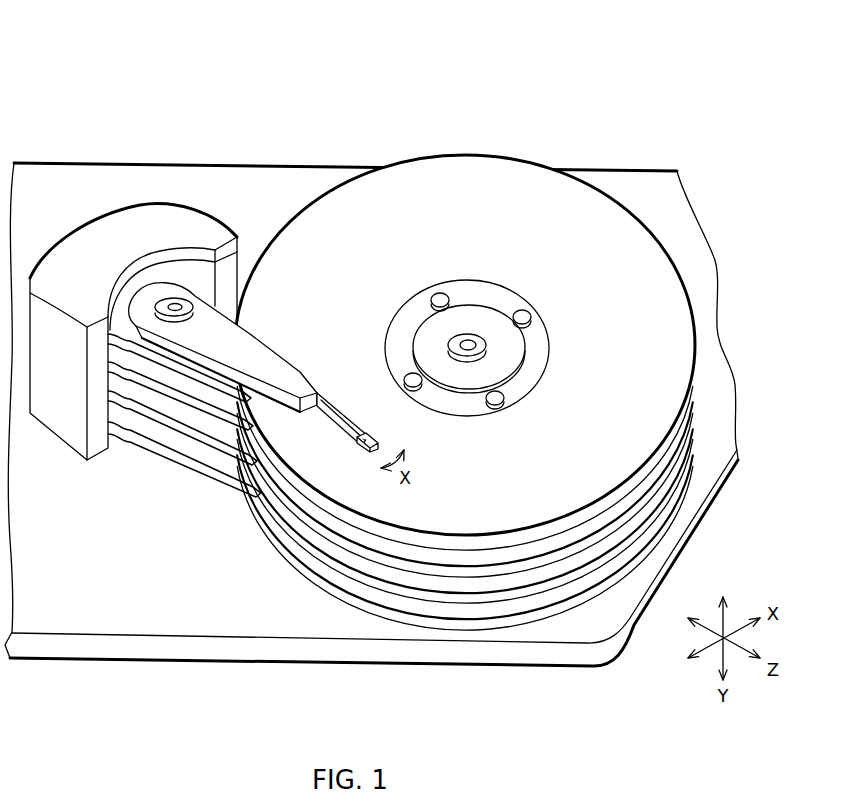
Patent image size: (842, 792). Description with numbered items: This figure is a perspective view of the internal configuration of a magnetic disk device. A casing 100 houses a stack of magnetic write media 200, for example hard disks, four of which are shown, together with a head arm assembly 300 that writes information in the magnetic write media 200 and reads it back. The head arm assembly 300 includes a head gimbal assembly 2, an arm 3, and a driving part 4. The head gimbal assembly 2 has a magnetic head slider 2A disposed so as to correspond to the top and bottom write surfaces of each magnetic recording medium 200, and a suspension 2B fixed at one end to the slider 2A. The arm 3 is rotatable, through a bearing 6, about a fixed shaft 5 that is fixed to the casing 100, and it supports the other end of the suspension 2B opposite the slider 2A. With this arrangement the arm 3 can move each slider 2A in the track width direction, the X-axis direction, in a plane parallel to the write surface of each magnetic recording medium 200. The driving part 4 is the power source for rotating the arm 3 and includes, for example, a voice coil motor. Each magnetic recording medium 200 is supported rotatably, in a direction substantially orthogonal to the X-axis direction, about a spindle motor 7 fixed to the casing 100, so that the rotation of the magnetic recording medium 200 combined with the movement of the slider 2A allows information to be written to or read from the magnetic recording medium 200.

The head arm assembly 300 is at (508, 64).
The head gimbal assembly 2 is at (507, 106).
The magnetic head slider 2A is at (365, 433).
The suspension 2B is at (337, 418).
The arm 3 is at (267, 366).
The driving part 4 is at (93, 203).
The fixed shaft 5 is at (175, 305).
The bearing 6 is at (157, 300).
The spindle motor 7 is at (466, 357).
The casing 100 is at (630, 190).
The magnetic write medium 200 is at (638, 327).